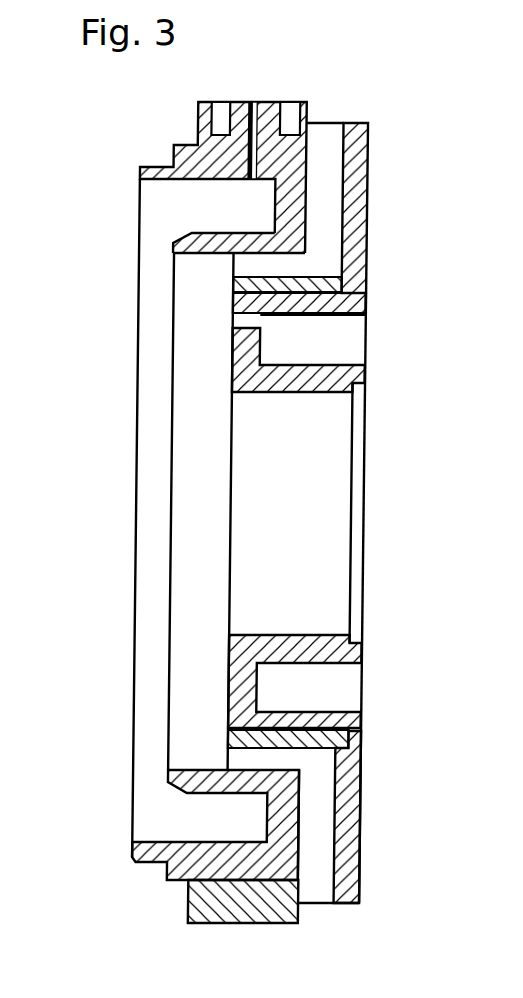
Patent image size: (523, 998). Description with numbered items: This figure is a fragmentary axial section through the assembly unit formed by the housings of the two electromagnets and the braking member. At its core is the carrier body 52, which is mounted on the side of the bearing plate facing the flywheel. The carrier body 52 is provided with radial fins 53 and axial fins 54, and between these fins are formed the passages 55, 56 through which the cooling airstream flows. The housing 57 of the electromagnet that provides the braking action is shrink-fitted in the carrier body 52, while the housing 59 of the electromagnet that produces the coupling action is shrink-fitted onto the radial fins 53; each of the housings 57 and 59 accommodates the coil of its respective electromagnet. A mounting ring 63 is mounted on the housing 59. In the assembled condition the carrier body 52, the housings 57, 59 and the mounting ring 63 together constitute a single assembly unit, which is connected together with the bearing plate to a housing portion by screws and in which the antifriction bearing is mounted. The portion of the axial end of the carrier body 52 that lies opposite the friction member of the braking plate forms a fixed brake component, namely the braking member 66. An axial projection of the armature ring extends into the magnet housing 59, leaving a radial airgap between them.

The carrier body 52 is at (353, 788).
The radial fins 53 is at (323, 850).
The axial fins 54 is at (259, 755).
The passage 55 is at (321, 142).
The passage 56 is at (253, 263).
The housing of the braking electromagnet 57 is at (242, 680).
The housing of the coupling electromagnet 59 is at (145, 163).
The mounting ring 63 is at (245, 917).
The braking member 66 is at (354, 191).